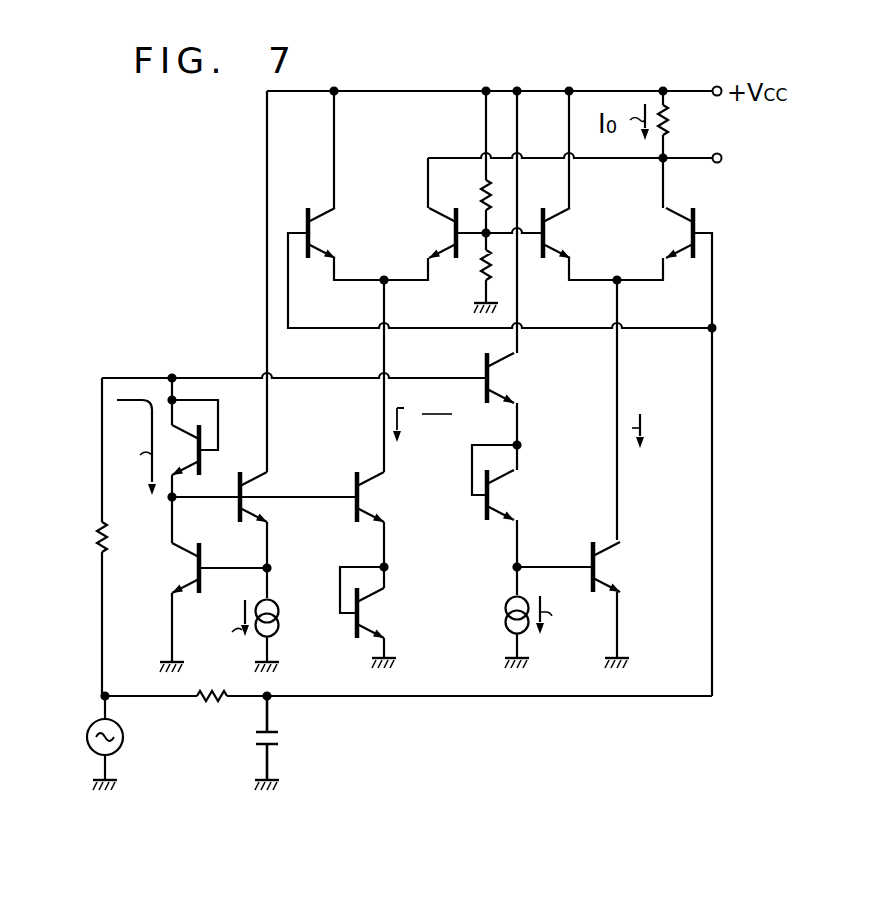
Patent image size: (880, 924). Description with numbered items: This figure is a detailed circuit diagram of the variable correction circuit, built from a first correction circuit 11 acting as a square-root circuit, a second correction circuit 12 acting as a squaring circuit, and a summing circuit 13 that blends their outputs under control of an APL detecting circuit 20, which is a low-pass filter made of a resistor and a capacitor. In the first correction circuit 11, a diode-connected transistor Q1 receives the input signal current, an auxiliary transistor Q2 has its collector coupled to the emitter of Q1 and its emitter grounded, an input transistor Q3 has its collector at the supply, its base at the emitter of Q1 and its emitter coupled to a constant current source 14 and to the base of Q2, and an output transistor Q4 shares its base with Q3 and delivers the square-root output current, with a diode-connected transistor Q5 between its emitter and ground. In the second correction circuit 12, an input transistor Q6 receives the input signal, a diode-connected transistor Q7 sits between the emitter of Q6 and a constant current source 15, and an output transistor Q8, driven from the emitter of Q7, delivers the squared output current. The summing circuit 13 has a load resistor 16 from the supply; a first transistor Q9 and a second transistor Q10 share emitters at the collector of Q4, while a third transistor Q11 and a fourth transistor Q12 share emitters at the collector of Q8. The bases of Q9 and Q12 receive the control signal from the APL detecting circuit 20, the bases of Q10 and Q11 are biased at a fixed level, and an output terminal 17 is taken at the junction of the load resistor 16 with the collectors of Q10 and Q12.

The first correction circuit 11 is at (333, 450).
The second correction circuit 12 is at (605, 460).
The summing circuit 13 is at (632, 210).
The constant current source 14 is at (278, 625).
The constant current source 15 is at (505, 625).
The load resistor 16 is at (668, 120).
The output terminal 17 is at (720, 199).
The APL detecting circuit 20 is at (220, 768).
The diode-connected transistor Q1 is at (204, 462).
The auxiliary transistor Q2 is at (192, 568).
The input transistor Q3 is at (248, 504).
The output transistor Q4 is at (364, 500).
The diode-connected transistor Q5 is at (364, 616).
The input transistor Q6 is at (494, 381).
The diode-connected transistor Q7 is at (494, 498).
The output transistor Q8 is at (600, 570).
The first transistor Q9 is at (306, 262).
The second transistor Q10 is at (458, 262).
The third transistor Q11 is at (541, 262).
The fourth transistor Q12 is at (695, 262).